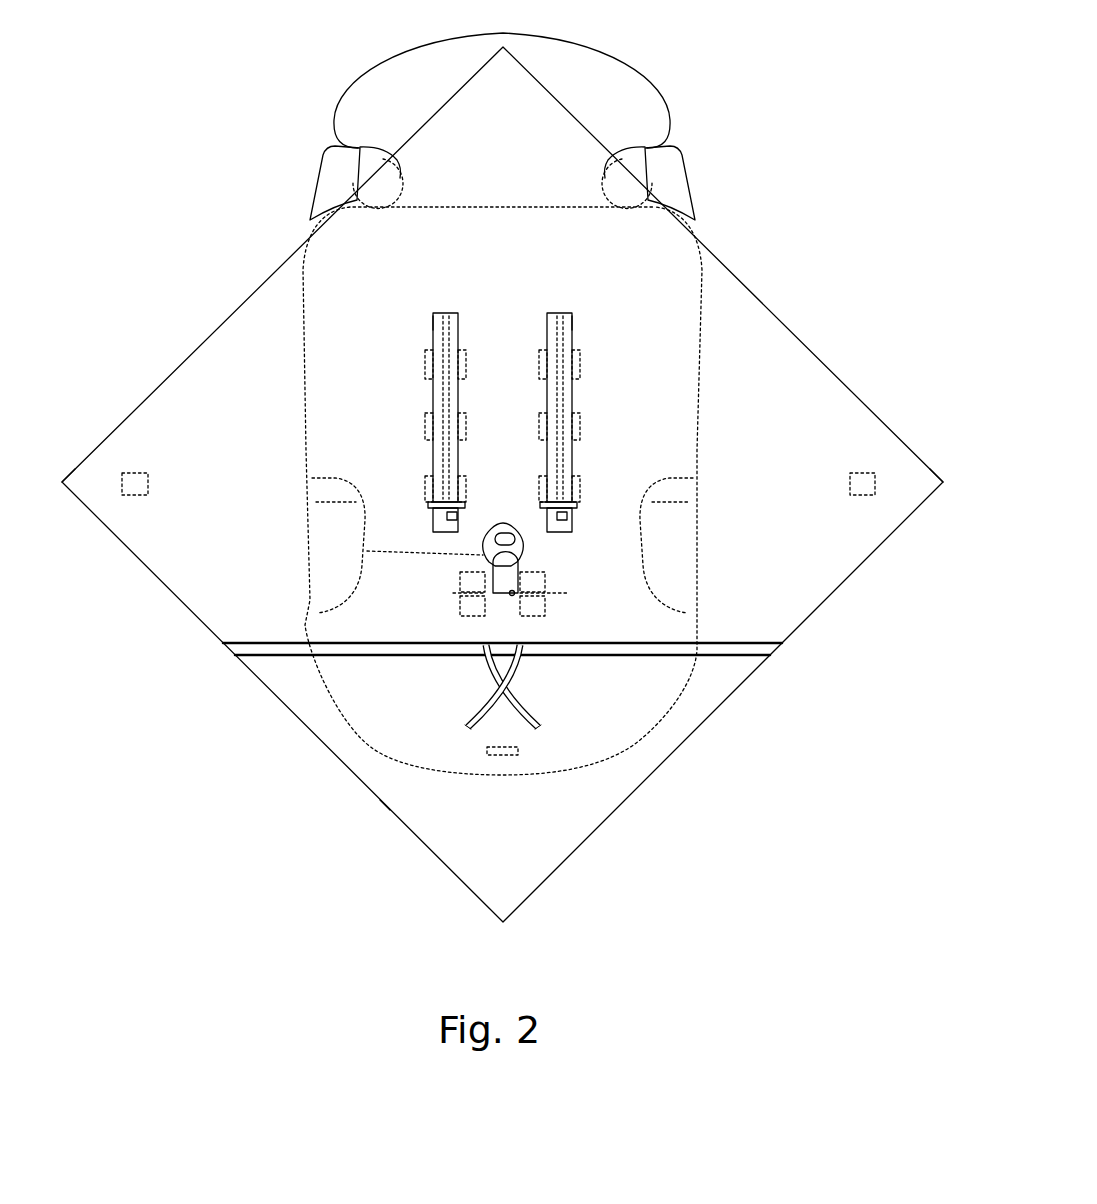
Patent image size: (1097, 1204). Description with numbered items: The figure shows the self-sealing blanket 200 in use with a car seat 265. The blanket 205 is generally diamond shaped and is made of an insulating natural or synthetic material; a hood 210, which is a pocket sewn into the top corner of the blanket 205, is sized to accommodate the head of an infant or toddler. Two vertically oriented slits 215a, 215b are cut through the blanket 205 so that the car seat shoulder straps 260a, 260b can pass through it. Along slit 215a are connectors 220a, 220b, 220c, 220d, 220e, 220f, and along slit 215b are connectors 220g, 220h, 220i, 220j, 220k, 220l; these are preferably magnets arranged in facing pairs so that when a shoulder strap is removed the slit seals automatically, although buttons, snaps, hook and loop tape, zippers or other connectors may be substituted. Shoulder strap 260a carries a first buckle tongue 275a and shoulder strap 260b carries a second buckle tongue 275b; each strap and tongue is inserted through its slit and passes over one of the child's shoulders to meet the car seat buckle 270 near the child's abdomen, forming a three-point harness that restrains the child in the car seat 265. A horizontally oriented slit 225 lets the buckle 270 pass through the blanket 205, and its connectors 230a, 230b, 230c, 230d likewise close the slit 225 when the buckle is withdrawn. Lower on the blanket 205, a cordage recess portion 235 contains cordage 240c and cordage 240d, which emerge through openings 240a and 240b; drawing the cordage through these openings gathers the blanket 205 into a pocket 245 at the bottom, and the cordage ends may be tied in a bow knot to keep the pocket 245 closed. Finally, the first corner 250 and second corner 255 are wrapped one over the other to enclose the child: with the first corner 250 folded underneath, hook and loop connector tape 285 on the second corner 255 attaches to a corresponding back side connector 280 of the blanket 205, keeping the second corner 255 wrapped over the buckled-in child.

The self-sealing blanket 200 is at (810, 43).
The blanket 205 is at (695, 229).
The hood 210 is at (587, 131).
The slit 215a is at (443, 312).
The slit 215b is at (558, 312).
The connector 220a is at (428, 362).
The connector 220b is at (488, 346).
The connector 220c is at (428, 427).
The connector 220d is at (488, 409).
The connector 220e is at (428, 490).
The connector 220f is at (488, 474).
The connector 220g is at (541, 352).
The connector 220h is at (578, 358).
The connector 220i is at (541, 414).
The connector 220j is at (578, 423).
The connector 220k is at (541, 480).
The connector 220l is at (578, 486).
The slit 225 is at (550, 593).
The connector 230a is at (472, 574).
The connector 230b is at (460, 616).
The connector 230c is at (537, 574).
The connector 230d is at (545, 614).
The cordage recess portion 235 is at (283, 658).
The opening 240a is at (485, 647).
The opening 240b is at (521, 647).
The cordage 240c is at (467, 721).
The cordage 240d is at (540, 721).
The pocket 245 is at (382, 805).
The first corner 250 is at (942, 481).
The second corner 255 is at (62, 479).
The shoulder strap 260a is at (432, 320).
The shoulder strap 260b is at (573, 319).
The car seat 265 is at (352, 82).
The car seat buckle 270 is at (530, 548).
The first buckle tongue 275a is at (433, 508).
The second buckle tongue 275b is at (572, 508).
The back side connector 280 is at (135, 473).
The connector 285 is at (868, 473).